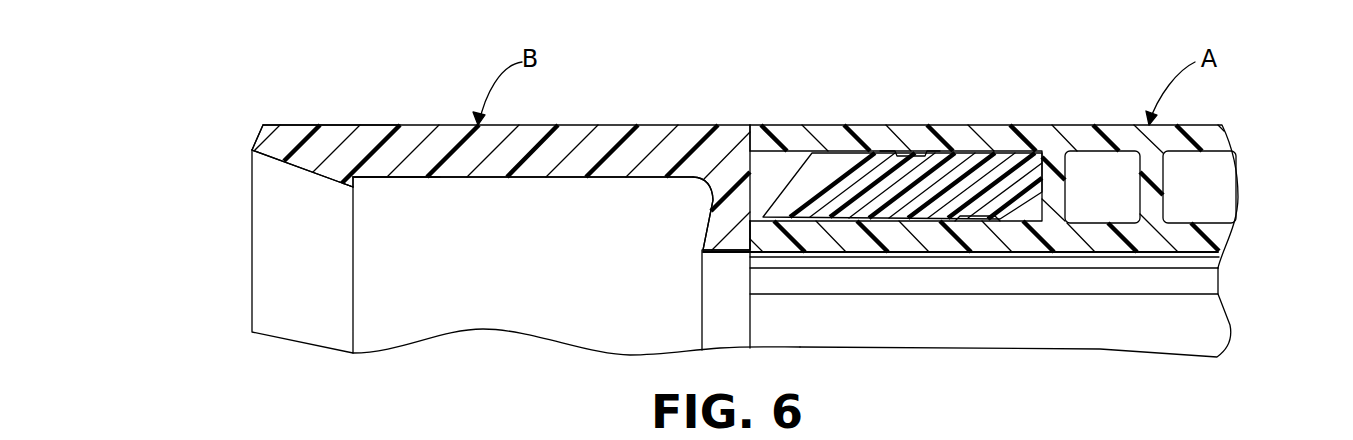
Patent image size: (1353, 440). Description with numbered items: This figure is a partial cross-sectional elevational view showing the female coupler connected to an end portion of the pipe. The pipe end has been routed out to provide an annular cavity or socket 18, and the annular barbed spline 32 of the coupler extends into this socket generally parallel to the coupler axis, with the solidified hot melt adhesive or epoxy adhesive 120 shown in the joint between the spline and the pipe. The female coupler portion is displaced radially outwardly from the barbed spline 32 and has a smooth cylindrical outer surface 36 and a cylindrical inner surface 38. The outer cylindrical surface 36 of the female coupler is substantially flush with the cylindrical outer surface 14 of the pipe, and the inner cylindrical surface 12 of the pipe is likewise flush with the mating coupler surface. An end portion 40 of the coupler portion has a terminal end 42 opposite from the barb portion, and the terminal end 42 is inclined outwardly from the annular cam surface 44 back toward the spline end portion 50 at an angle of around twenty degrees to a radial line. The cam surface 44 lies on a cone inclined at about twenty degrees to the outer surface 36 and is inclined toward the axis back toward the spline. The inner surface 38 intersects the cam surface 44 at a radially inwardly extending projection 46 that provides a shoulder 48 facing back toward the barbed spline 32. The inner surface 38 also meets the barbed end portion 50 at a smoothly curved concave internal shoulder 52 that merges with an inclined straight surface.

The inner cylindrical surface 12 is at (1197, 254).
The cylindrical outer surface 14 is at (1068, 125).
The annular cavity or socket 18 is at (913, 150).
The annular barbed spline 32 is at (818, 178).
The smooth cylindrical outer surface 36 is at (383, 123).
The cylindrical inner surface 38 is at (487, 177).
The end portion 40 is at (285, 137).
The terminal end 42 is at (258, 136).
The annular cam surface 44 is at (295, 166).
The radially inwardly extending projection 46 is at (352, 187).
The shoulder 48 is at (354, 180).
The spline end portion 50 is at (728, 177).
The smoothly curved concave internal shoulder 52 is at (713, 203).
The solidified hot melt adhesive or epoxy adhesive 120 is at (977, 175).